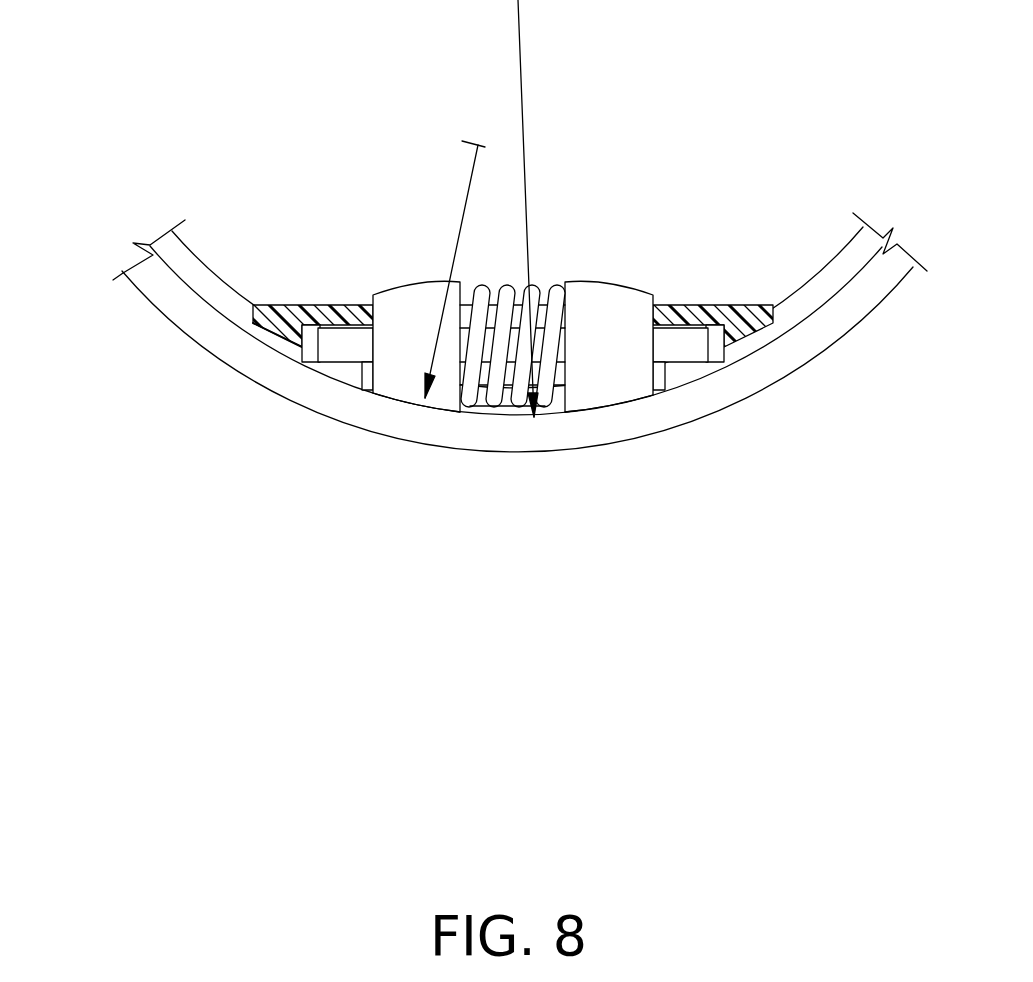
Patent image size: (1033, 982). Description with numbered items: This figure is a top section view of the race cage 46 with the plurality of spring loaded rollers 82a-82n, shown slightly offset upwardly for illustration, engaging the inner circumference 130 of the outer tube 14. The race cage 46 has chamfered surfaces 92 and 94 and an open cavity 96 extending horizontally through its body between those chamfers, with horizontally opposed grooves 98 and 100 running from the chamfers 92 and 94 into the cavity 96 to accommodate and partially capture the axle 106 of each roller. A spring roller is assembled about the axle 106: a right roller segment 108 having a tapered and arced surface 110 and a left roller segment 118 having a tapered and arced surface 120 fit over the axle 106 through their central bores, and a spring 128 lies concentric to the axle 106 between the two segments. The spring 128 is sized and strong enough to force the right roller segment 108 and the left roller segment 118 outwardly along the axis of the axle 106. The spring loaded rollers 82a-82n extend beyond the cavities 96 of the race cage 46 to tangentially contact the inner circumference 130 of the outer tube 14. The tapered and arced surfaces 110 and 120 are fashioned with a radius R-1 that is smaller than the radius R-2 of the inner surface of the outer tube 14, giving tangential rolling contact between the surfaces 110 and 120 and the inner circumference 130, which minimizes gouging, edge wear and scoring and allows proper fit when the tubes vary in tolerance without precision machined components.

The outer tube 14 is at (773, 397).
The race cage 46 is at (278, 259).
The spring loaded rollers 82a-82n is at (546, 275).
The chamfered surface 92 is at (226, 370).
The chamfered surface 94 is at (619, 387).
The open cavities 96 is at (740, 469).
The groove 98 is at (513, 303).
The groove 100 is at (705, 294).
The axle 106 is at (451, 396).
The right roller segment 108 is at (591, 280).
The tapered and arced surface 110 is at (609, 441).
The left roller segment 118 is at (435, 280).
The tapered and arced surface 120 is at (387, 429).
The spring 128 is at (466, 463).
The inner circumference 130 is at (455, 330).
The radius R-1 is at (427, 269).
The radius R-2 is at (485, 208).